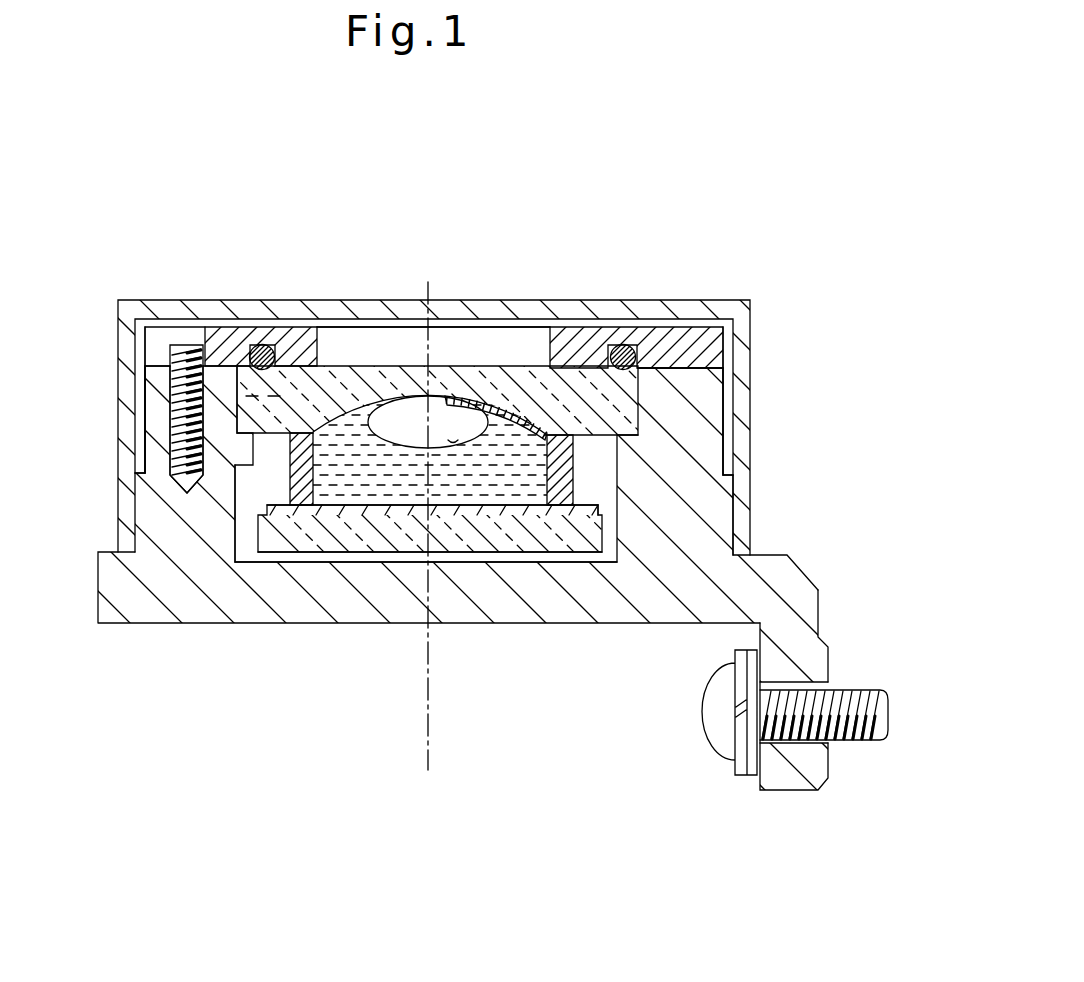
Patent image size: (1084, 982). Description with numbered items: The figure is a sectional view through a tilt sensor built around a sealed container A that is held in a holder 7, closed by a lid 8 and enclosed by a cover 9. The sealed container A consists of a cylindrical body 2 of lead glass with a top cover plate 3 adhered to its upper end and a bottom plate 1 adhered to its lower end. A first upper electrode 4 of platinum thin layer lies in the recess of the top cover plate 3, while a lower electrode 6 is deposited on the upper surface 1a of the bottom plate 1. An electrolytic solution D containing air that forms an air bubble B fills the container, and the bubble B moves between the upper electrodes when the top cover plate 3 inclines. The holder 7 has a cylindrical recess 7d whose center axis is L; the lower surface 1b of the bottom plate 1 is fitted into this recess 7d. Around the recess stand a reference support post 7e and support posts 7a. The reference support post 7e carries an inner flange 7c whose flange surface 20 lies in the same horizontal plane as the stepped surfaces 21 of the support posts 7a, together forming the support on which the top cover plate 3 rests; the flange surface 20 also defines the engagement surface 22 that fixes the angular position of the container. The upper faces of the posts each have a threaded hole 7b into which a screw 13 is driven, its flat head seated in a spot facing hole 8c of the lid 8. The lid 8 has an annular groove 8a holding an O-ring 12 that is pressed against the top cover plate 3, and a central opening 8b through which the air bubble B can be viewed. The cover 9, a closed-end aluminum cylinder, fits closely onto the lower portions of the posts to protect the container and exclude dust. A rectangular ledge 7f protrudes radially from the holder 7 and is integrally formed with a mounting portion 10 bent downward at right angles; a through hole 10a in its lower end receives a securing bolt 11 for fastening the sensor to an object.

The bottom plate 1 is at (605, 525).
The upper surface of the bottom plate 1a is at (600, 492).
The lower surface of the bottom plate 1b is at (562, 553).
The cylindrical body 2 is at (578, 463).
The top cover plate 3 is at (600, 392).
The first upper electrode 4 is at (466, 400).
The lower electrode 6 is at (235, 512).
The holder 7 is at (100, 560).
The support post 7a is at (702, 380).
The threaded hole 7b is at (153, 360).
The inner flange 7c is at (172, 436).
The cylindrical recess 7d is at (272, 560).
The reference support post 7e is at (155, 402).
The ledge 7f is at (762, 567).
The lid 8 is at (717, 350).
The annular groove 8a is at (267, 343).
The central opening 8b is at (545, 340).
The spot facing hole 8c is at (147, 357).
The cover 9 is at (718, 300).
The mounting portion 10 is at (818, 660).
The through hole 10a is at (800, 745).
The securing bolt 11 is at (833, 740).
The O-ring 12 is at (253, 348).
The screw 13 is at (190, 333).
The flange surface 20 is at (272, 396).
The stepped surface 21 is at (585, 395).
The engagement surface 22 is at (252, 395).
The sealed container A is at (394, 356).
The air bubble B is at (453, 432).
The electrolytic solution D is at (370, 480).
The center axis L is at (435, 742).